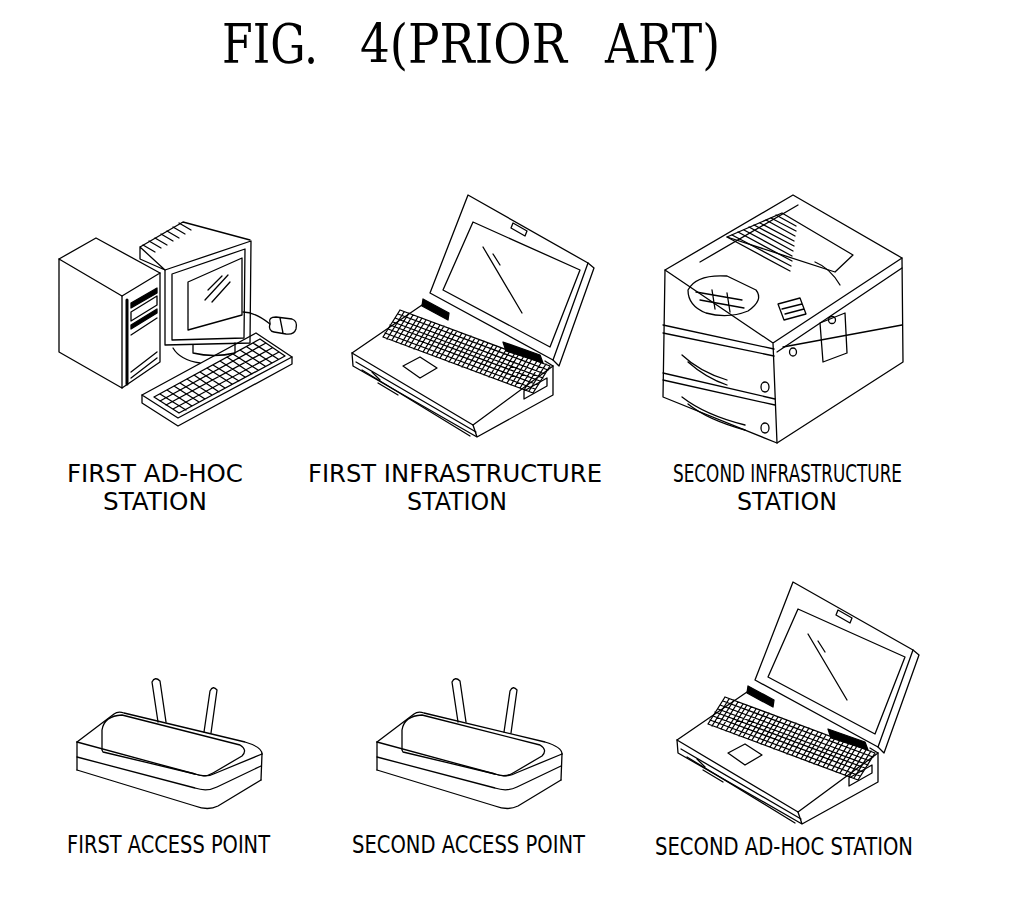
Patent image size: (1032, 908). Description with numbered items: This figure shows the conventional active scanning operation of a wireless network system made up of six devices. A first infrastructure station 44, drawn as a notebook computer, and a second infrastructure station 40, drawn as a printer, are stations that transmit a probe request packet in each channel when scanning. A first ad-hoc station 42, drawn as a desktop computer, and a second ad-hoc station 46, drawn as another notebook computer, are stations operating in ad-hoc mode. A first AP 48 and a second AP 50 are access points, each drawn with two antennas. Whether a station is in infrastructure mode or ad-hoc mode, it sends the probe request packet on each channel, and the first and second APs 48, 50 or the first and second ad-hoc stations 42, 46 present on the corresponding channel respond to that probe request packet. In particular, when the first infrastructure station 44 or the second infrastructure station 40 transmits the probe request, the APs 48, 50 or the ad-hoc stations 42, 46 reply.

The second infrastructure station 40 is at (852, 218).
The first ad-hoc station 42 is at (118, 247).
The first infrastructure station 44 is at (450, 257).
The second ad-hoc station 46 is at (777, 643).
The first AP 48 is at (107, 716).
The second AP 50 is at (407, 716).